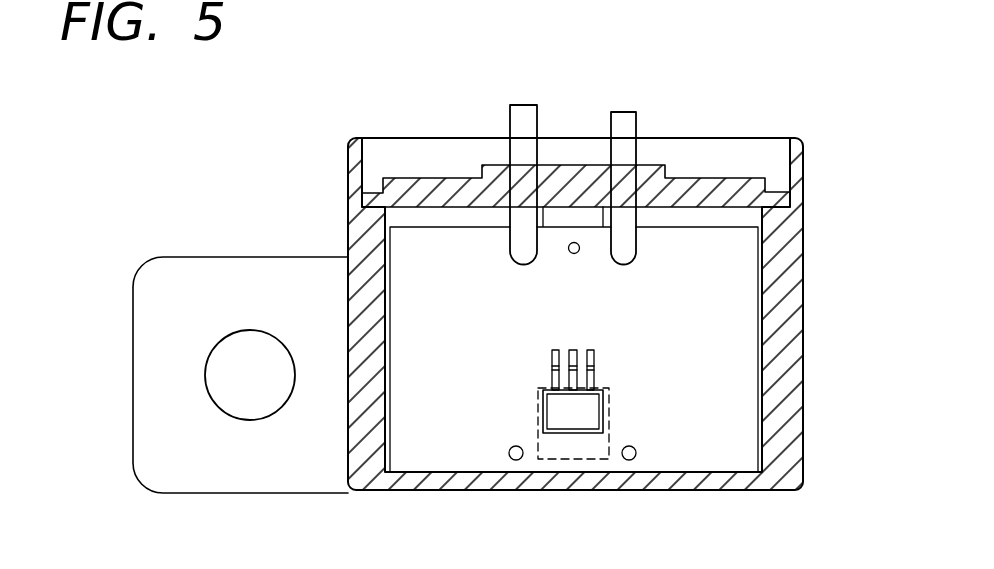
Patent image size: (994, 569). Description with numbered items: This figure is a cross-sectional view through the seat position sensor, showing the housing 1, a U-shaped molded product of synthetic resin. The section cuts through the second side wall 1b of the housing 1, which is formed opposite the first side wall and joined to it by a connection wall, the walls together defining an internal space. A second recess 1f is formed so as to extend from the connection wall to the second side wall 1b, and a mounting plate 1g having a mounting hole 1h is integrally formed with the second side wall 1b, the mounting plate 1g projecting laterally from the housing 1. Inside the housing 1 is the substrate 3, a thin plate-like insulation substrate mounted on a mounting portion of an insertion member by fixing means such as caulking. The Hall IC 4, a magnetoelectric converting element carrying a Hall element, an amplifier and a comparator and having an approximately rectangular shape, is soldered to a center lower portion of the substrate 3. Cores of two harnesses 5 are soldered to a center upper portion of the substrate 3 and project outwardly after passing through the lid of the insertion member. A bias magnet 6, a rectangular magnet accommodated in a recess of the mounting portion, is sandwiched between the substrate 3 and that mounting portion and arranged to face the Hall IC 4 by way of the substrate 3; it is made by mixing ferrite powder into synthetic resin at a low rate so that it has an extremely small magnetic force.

The housing 1 is at (346, 158).
The second side wall 1b is at (803, 337).
The second recess 1f is at (460, 217).
The mounting plate 1g is at (178, 257).
The mounting hole 1h is at (231, 377).
The substrate 3 is at (733, 225).
The Hall IC 4 is at (590, 437).
The harnesses 5 is at (638, 123).
The bias magnet 6 is at (552, 460).